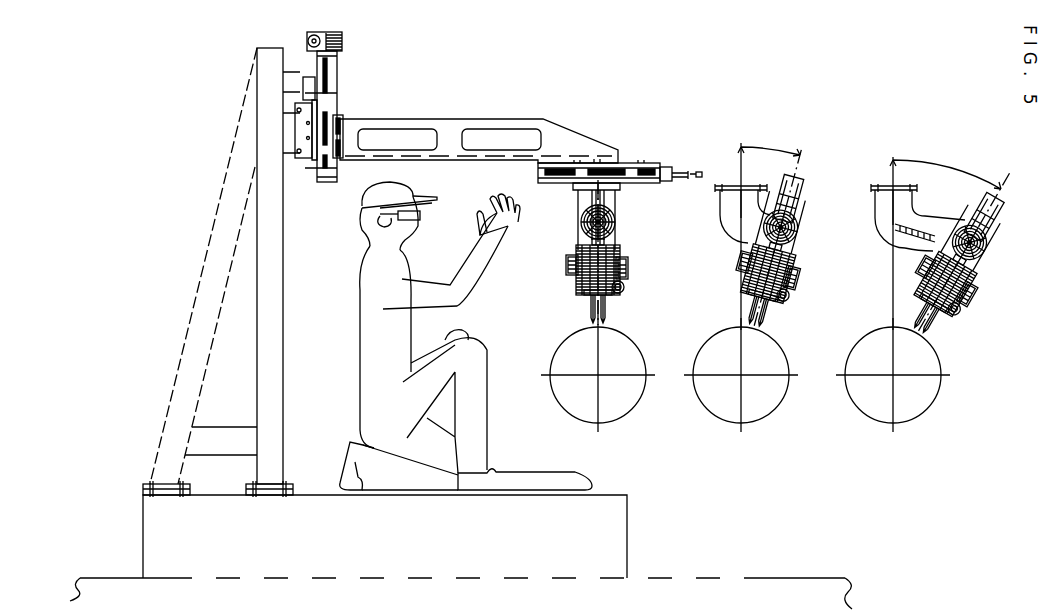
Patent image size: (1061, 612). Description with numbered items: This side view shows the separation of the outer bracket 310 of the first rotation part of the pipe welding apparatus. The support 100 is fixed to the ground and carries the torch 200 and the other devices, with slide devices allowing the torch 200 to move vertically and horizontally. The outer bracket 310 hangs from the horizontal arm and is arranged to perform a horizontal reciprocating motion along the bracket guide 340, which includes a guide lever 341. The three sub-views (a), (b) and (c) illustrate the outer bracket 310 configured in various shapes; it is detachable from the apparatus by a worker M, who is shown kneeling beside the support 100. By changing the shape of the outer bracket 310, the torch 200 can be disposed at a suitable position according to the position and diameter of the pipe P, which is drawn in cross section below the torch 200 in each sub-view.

The support 100 is at (210, 212).
The torch 200 is at (606, 296).
The outer bracket 310 is at (615, 207).
The bracket guide 340 is at (622, 165).
The guide lever 341 is at (673, 167).
The worker M is at (362, 343).
The pipe P is at (562, 339).